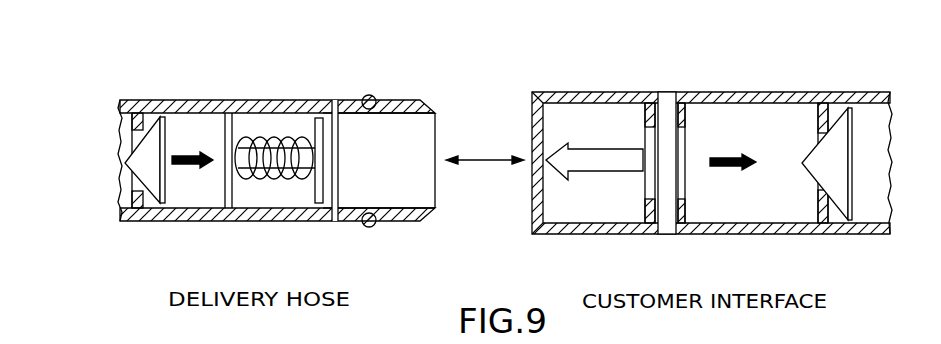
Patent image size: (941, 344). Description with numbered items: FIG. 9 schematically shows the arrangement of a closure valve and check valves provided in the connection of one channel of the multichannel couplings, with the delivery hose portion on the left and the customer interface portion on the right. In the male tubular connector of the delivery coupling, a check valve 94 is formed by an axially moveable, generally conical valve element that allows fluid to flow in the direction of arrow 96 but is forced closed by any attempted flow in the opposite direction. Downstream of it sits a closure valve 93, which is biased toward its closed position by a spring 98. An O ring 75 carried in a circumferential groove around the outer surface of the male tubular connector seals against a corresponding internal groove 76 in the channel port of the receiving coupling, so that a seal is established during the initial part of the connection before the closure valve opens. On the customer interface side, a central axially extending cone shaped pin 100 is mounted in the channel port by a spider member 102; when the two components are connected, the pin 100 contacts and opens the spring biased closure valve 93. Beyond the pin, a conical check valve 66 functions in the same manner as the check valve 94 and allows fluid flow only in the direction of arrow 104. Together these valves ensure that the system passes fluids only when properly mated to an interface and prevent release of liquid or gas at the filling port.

The conical check valve 66 is at (850, 157).
The O ring 75 is at (373, 97).
The internal groove 76 is at (603, 100).
The closure valve 93 is at (321, 120).
The check valve 94 is at (127, 152).
The arrow 96 is at (186, 162).
The spring 98 is at (244, 178).
The cone shaped pin 100 is at (593, 173).
The spider member 102 is at (657, 145).
The arrow 104 is at (729, 168).